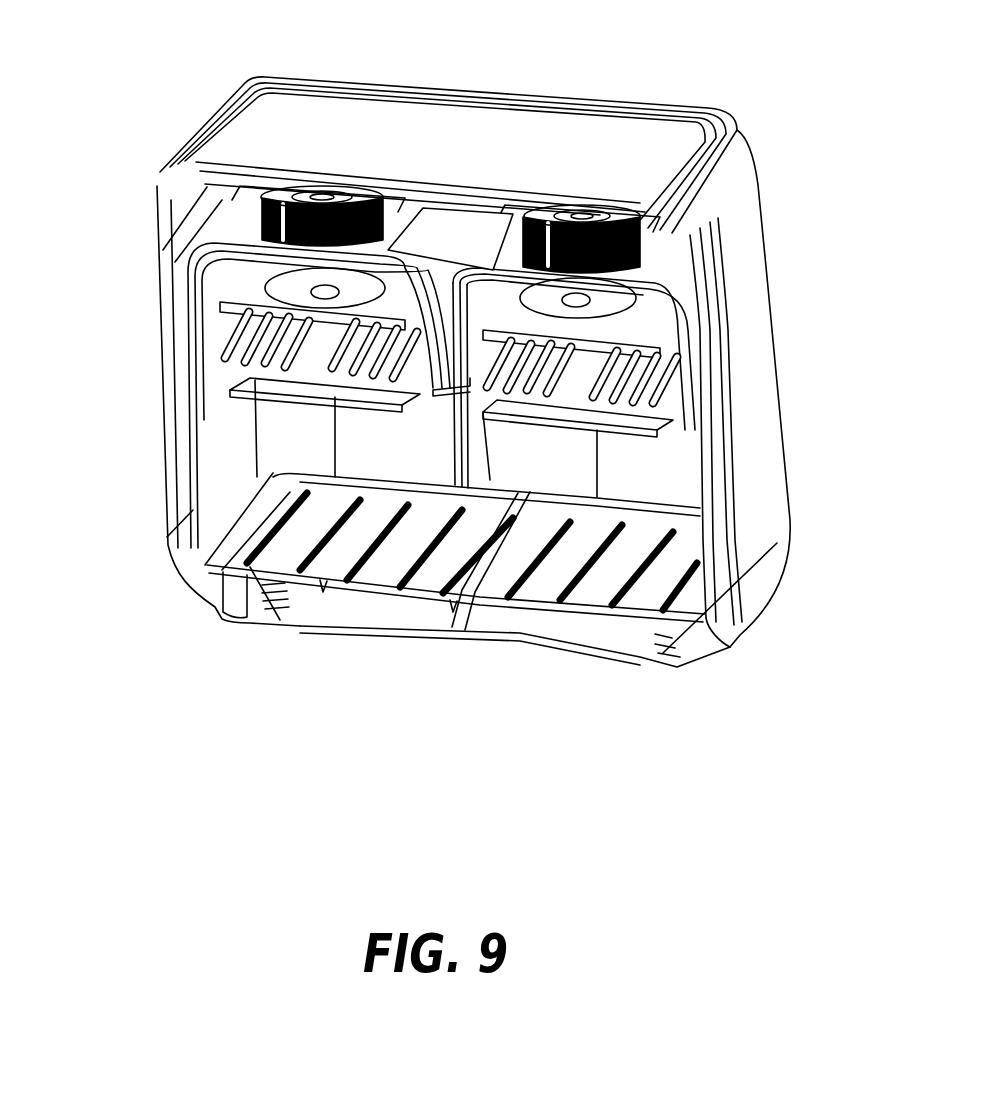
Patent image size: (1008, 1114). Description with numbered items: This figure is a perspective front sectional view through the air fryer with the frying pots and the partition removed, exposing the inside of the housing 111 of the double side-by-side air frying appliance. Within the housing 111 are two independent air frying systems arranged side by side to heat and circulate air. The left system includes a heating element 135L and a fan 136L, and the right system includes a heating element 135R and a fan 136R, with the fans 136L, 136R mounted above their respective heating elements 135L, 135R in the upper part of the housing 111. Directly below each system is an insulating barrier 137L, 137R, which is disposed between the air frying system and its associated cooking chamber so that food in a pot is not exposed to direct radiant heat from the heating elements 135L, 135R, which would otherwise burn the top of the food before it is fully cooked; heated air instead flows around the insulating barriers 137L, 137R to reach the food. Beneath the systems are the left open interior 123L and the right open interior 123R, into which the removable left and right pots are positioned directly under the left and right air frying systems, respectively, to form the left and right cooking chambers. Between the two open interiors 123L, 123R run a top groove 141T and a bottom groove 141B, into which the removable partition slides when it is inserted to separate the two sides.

The housing 111 is at (475, 87).
The fan 136L is at (295, 262).
The fan 136R is at (605, 297).
The heating element 135L is at (232, 362).
The heating element 135R is at (665, 405).
The insulating barrier 137L is at (285, 395).
The insulating barrier 137R is at (620, 432).
The top groove 141T is at (447, 397).
The bottom groove 141B is at (445, 590).
The left open interior 123L is at (400, 557).
The right open interior 123R is at (598, 577).